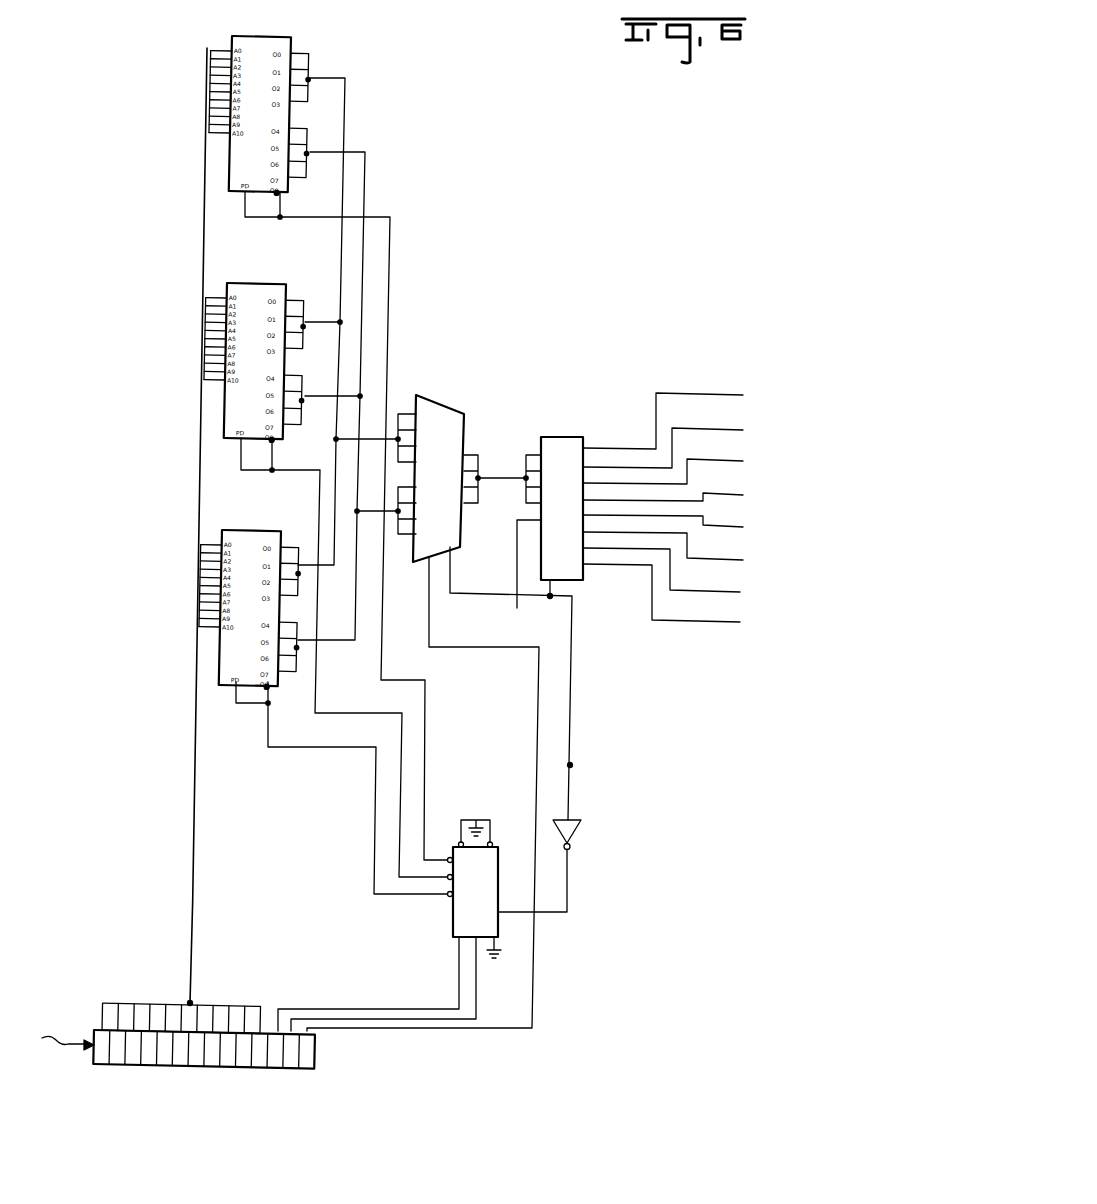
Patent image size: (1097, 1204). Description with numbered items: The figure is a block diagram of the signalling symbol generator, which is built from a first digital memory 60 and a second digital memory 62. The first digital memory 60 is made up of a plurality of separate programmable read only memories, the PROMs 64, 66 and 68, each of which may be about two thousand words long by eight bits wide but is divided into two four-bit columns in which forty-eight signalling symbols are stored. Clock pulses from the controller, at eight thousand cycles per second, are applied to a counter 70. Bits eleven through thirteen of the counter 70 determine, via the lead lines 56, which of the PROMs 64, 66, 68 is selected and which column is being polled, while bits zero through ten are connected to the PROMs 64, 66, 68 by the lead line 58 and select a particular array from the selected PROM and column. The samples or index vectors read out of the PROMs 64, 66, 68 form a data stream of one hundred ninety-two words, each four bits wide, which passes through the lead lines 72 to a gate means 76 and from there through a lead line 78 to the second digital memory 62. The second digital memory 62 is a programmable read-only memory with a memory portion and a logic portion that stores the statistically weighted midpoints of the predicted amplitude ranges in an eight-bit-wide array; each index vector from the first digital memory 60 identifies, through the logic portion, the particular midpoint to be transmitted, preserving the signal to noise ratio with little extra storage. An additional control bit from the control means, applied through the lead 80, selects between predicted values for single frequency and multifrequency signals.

The lead lines 56 is at (424, 850).
The lead line 58 is at (192, 902).
The first digital memory 60 is at (281, 803).
The second digital memory 62 is at (582, 578).
The programmable read only memory 64 is at (233, 185).
The programmable read only memory 66 is at (228, 437).
The programmable read only memory 68 is at (222, 681).
The counter 70 is at (170, 1067).
The lead lines 72 is at (340, 336).
The gate means 76 is at (453, 397).
The lead line 78 is at (500, 478).
The lead 80 is at (512, 575).